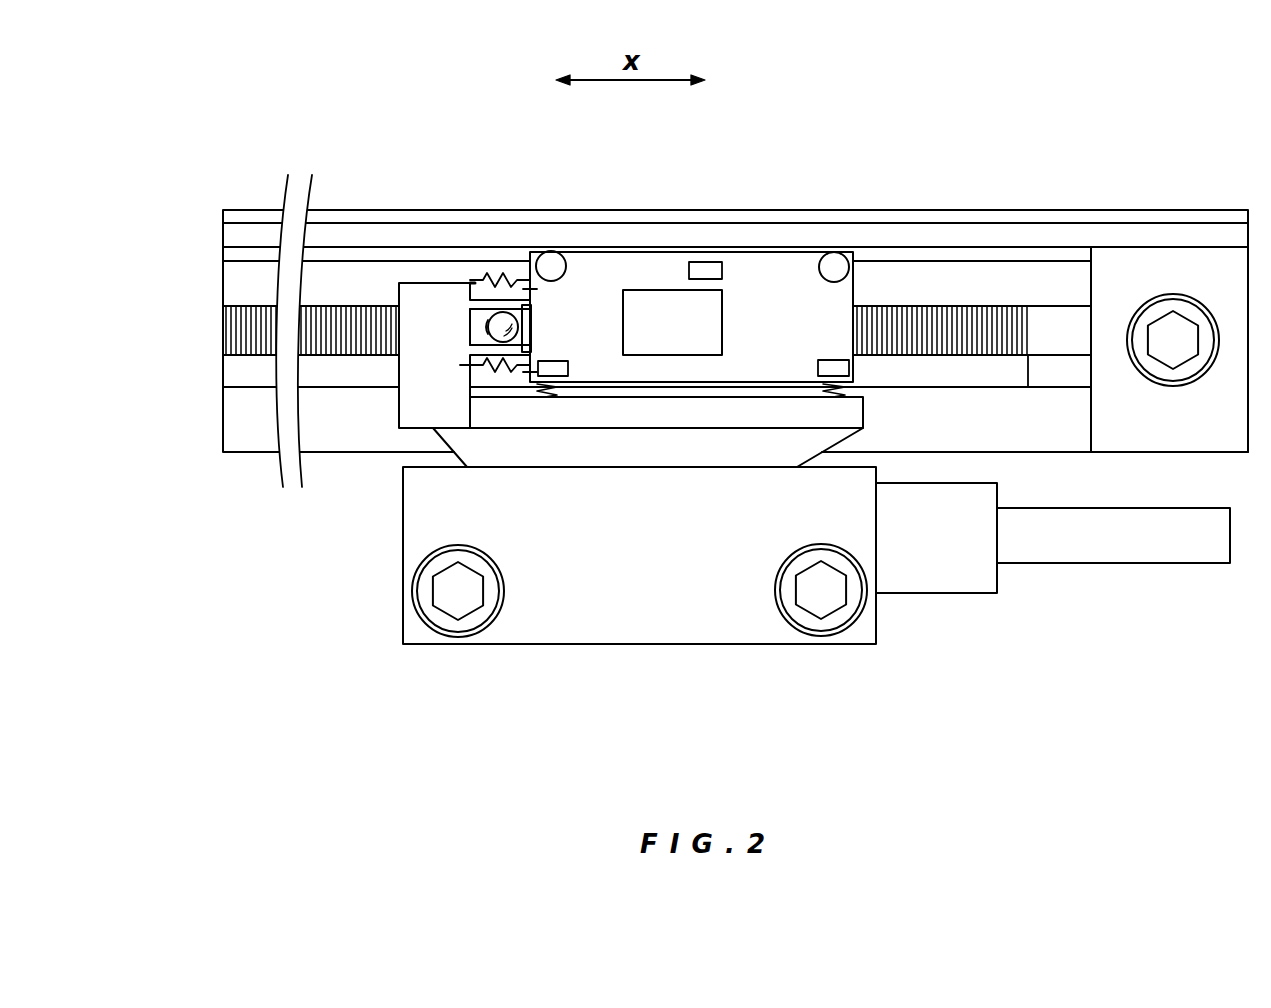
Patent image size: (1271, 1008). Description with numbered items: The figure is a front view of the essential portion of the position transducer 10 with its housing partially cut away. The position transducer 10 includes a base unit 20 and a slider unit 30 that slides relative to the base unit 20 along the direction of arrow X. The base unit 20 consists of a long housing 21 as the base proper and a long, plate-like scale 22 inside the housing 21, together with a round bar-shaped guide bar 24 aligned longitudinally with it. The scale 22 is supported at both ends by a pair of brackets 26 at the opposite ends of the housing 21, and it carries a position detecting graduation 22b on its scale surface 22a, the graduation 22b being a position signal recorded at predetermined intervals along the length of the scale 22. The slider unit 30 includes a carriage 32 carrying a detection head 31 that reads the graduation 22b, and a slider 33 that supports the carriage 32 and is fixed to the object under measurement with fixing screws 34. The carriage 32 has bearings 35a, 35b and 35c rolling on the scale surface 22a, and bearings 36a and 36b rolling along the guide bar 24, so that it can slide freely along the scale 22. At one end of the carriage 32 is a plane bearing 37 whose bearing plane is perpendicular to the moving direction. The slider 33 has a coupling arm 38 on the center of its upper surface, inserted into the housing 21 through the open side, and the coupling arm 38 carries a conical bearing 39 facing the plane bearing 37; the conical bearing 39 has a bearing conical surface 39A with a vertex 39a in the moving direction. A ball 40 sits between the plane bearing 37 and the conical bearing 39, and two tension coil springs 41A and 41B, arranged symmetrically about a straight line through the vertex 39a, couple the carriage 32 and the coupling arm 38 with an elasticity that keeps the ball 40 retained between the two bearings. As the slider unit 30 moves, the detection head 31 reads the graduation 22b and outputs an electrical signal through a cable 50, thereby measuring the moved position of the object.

The position transducer 10 is at (185, 176).
The base unit 20 is at (1198, 137).
The housing 21 is at (1170, 213).
The scale 22 is at (973, 272).
The scale surface 22a is at (1047, 370).
The graduation 22b is at (958, 337).
The guide bar 24 is at (358, 232).
The bracket 26 is at (1220, 430).
The slider unit 30 is at (678, 727).
The detection head 31 is at (712, 308).
The carriage 32 is at (592, 372).
The slider 33 is at (660, 617).
The fixing screw 34 is at (442, 595).
The bearing 35a is at (567, 360).
The bearing 35b is at (840, 372).
The bearing 35c is at (705, 270).
The bearing 36a is at (555, 262).
The bearing 36b is at (833, 262).
The plane bearing 37 is at (524, 315).
The coupling arm 38 is at (420, 345).
The conical bearing 39 is at (473, 318).
The bearing conical surface 39A is at (497, 310).
The vertex 39a is at (490, 328).
The ball 40 is at (515, 320).
The tension coil spring 41A is at (492, 280).
The tension coil spring 41B is at (505, 370).
The cable 50 is at (1128, 548).